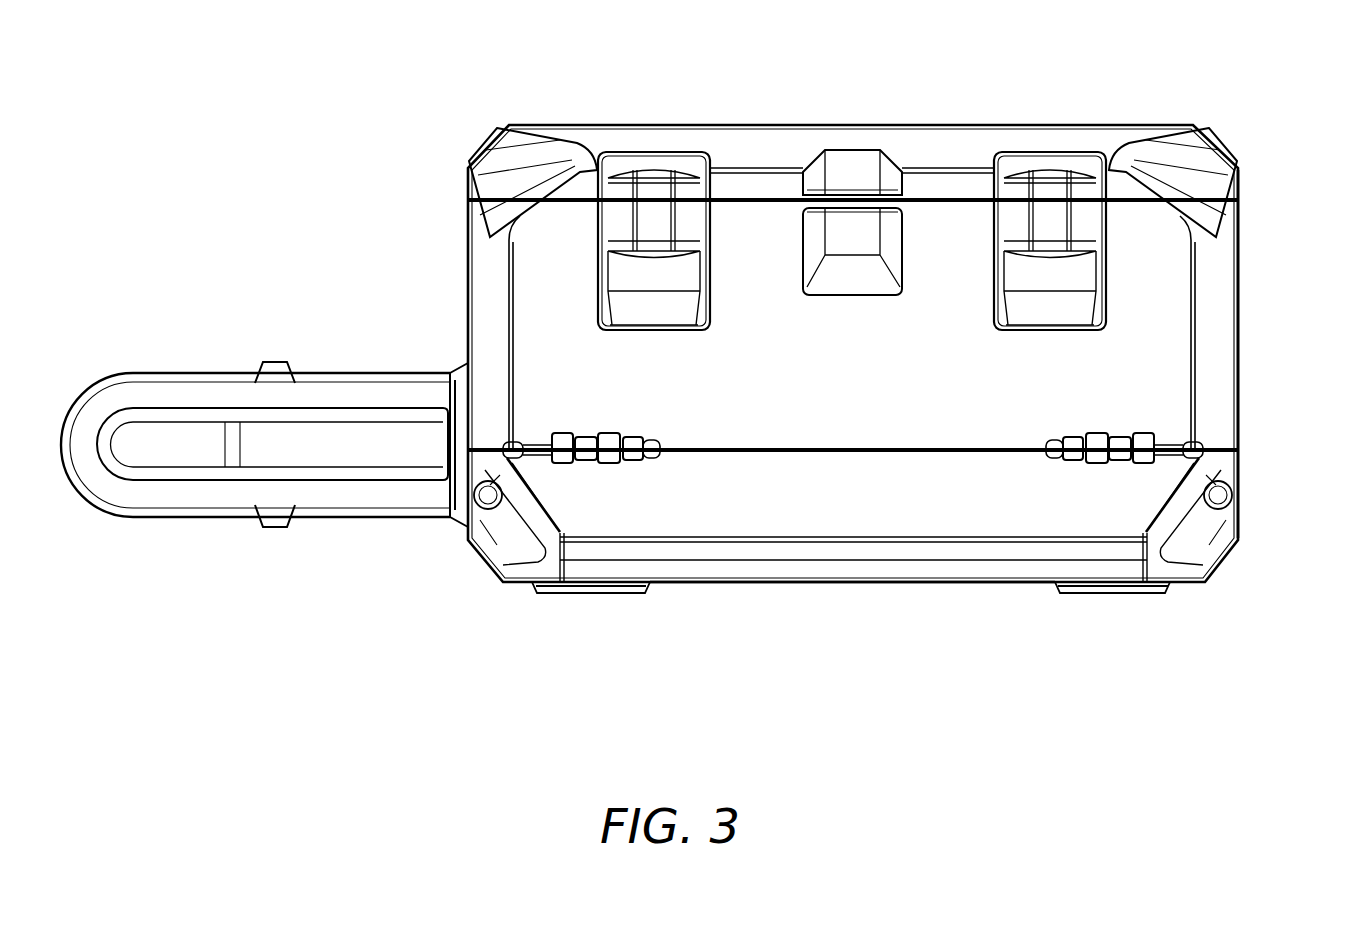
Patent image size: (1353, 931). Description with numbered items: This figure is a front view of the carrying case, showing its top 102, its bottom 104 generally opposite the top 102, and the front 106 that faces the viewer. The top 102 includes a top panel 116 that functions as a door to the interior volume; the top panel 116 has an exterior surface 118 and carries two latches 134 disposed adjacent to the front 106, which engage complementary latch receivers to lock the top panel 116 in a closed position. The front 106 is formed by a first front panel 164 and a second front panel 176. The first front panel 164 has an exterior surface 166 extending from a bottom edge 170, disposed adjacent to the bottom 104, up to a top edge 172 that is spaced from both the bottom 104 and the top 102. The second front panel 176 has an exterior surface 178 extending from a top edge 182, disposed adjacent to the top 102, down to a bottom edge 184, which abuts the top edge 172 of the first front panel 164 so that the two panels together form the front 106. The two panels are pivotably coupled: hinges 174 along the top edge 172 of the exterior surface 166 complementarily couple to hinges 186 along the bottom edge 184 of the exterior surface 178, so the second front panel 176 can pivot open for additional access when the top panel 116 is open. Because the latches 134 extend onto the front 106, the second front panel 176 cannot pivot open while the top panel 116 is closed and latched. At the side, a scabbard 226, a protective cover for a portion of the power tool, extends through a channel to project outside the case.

The top 102 is at (755, 112).
The bottom 104 is at (1024, 610).
The front 106 is at (1262, 279).
The top panel 116 is at (862, 130).
The exterior surface 118 is at (780, 161).
The latches 134 is at (653, 172).
The first front panel 164 is at (1241, 525).
The exterior surface 166 is at (837, 513).
The bottom edge 170 is at (840, 585).
The top edge 172 is at (718, 452).
The hinges 174 is at (590, 490).
The second front panel 176 is at (1182, 408).
The exterior surface 178 is at (855, 373).
The top edge 182 is at (947, 195).
The bottom edge 184 is at (962, 584).
The hinges 186 is at (566, 413).
The scabbard 226 is at (92, 396).